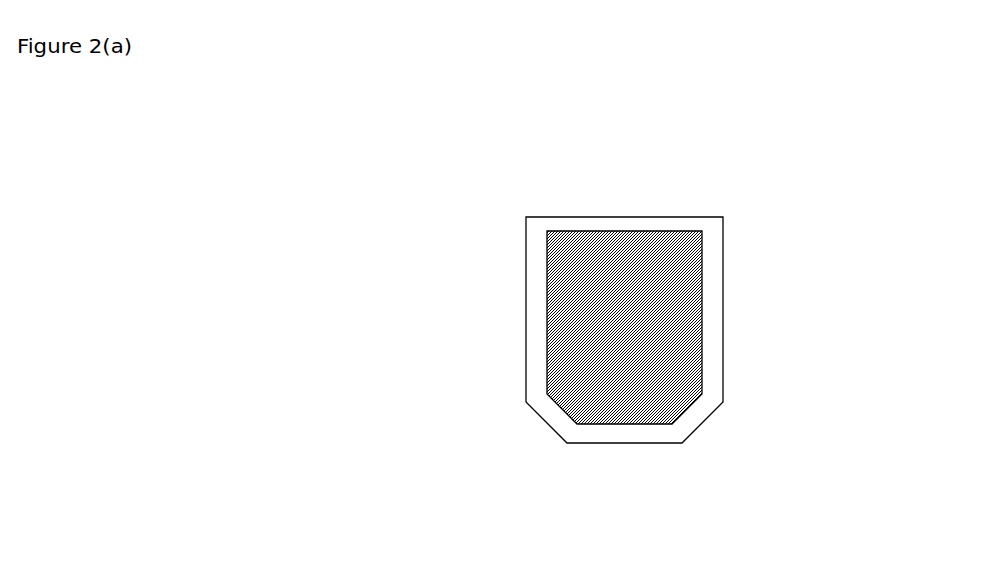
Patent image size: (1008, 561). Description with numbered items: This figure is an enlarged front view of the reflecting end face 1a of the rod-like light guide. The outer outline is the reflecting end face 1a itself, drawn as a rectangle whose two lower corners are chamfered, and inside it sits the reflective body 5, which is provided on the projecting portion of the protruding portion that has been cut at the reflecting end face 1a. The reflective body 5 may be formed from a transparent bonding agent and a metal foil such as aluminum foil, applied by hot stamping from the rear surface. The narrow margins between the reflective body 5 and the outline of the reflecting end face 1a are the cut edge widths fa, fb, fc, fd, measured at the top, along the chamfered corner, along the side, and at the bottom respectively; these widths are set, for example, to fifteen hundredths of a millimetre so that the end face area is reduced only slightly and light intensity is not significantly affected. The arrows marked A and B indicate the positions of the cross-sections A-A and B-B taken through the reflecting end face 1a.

The reflecting end face 1a is at (535, 247).
The reflective body 5 is at (684, 238).
The section line A- A is at (625, 198).
The section line B- B is at (510, 320).
The cut edge width fa is at (723, 217).
The cut edge width fb is at (702, 394).
The cut edge width fc is at (702, 424).
The cut edge width fd is at (567, 443).